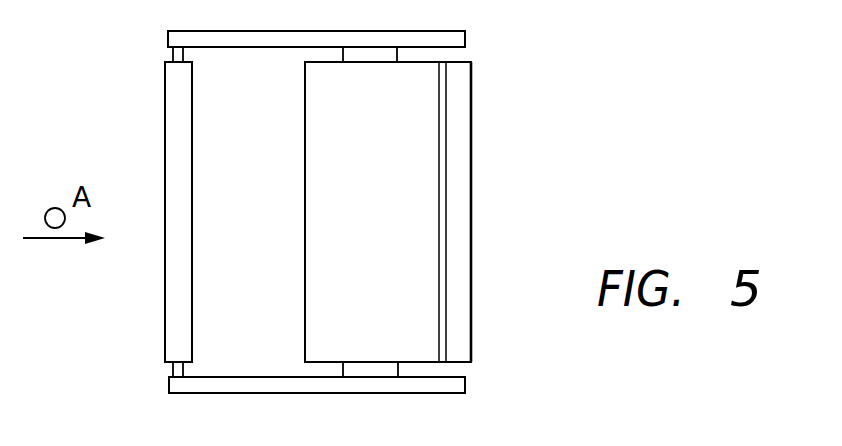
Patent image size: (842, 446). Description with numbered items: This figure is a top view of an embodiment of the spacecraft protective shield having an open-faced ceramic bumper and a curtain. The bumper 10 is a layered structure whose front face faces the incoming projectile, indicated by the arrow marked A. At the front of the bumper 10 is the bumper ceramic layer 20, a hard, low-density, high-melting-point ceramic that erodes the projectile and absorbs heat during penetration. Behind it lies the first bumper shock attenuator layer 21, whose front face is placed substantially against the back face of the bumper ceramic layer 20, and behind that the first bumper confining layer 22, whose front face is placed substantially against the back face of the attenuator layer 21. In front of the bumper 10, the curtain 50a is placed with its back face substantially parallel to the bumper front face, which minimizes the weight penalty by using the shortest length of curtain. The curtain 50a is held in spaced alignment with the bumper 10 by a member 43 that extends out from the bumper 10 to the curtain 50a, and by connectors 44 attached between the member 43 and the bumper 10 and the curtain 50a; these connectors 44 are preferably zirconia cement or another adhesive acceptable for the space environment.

The bumper 10 is at (471, 362).
The bumper ceramic layer 20 is at (410, 98).
The first bumper shock attenuator layer 21 is at (442, 127).
The first bumper confining layer 22 is at (457, 172).
The member 43 is at (252, 385).
The connectors 44 is at (175, 368).
The curtain 50a is at (172, 120).